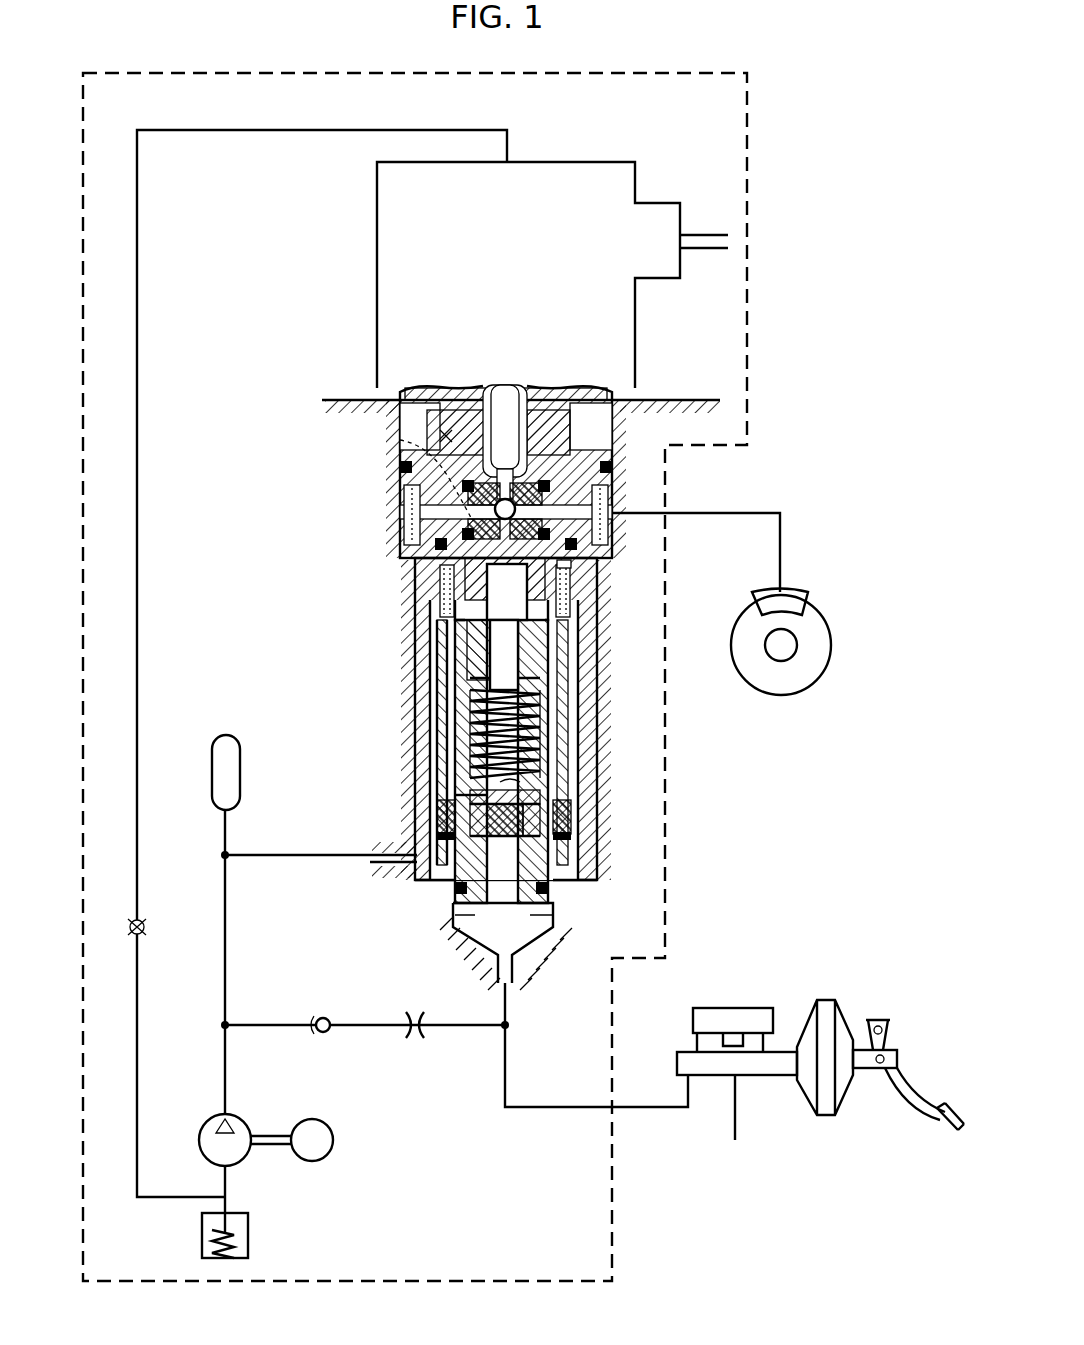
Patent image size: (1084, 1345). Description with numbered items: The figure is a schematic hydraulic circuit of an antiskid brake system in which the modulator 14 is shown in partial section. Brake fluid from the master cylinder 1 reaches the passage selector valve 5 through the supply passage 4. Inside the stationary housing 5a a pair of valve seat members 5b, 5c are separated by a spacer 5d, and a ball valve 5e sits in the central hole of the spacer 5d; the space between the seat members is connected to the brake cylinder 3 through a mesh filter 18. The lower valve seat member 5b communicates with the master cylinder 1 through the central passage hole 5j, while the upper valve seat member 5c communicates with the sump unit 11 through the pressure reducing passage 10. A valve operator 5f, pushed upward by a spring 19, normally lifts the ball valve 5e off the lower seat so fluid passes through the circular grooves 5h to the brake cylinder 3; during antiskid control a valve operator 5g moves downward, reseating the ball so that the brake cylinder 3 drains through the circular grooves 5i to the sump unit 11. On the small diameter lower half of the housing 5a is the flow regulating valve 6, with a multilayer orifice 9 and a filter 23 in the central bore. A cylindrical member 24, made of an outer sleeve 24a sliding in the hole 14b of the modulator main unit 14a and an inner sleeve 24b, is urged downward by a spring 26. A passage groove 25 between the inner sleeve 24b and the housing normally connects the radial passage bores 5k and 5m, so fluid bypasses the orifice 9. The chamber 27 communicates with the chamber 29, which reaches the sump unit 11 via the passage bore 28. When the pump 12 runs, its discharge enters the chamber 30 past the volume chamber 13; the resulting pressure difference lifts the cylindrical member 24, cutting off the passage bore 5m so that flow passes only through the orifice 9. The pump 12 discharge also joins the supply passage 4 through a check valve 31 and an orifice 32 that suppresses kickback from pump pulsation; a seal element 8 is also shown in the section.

The master cylinder 1 is at (771, 1066).
The brake cylinder 3 is at (797, 598).
The supply passage 4 is at (588, 1108).
The passage selector valve 5 is at (506, 730).
The stationary housing 5a is at (610, 494).
The lower valve seat member 5b is at (425, 582).
The upper valve seat member 5c is at (548, 432).
The spacer 5d is at (460, 488).
The ball valve 5e is at (547, 540).
The valve operator 5f is at (464, 538).
The valve operator 5g is at (549, 489).
The circular grooves 5h is at (507, 592).
The circular grooves 5i is at (518, 386).
The central passage hole 5j is at (522, 647).
The passage bore 5k is at (473, 650).
The passage bore 5m is at (447, 800).
The flow regulating valve 6 is at (573, 815).
The piston cup 8 is at (540, 781).
The orifice 9 is at (545, 740).
The pressure reducing passage 10 is at (137, 407).
The sump unit 11 is at (250, 1236).
The pump 12 is at (200, 1130).
The volume chamber 13 is at (212, 768).
The modulator 14 is at (614, 1240).
The modulator main unit 14a is at (696, 398).
The hole 14b is at (415, 650).
The mesh filter 18 is at (612, 522).
The spring 19 is at (440, 612).
The filter 23 is at (505, 840).
The cylindrical member 24 is at (428, 742).
The outer sleeve 24a is at (437, 696).
The inner sleeve 24b is at (443, 737).
The passage groove 25 is at (447, 772).
The spring 26 is at (580, 618).
The chamber 27 is at (585, 590).
The passage bore 28 is at (400, 442).
The chamber 29 is at (457, 432).
The chamber 30 is at (432, 885).
The check valve 31 is at (321, 1017).
The orifice 32 is at (417, 1035).